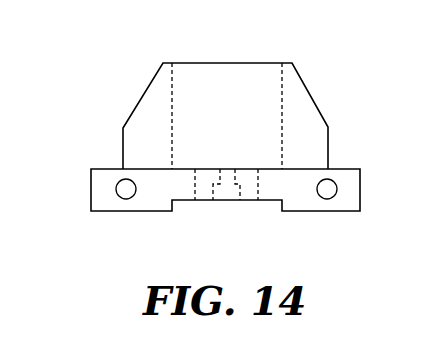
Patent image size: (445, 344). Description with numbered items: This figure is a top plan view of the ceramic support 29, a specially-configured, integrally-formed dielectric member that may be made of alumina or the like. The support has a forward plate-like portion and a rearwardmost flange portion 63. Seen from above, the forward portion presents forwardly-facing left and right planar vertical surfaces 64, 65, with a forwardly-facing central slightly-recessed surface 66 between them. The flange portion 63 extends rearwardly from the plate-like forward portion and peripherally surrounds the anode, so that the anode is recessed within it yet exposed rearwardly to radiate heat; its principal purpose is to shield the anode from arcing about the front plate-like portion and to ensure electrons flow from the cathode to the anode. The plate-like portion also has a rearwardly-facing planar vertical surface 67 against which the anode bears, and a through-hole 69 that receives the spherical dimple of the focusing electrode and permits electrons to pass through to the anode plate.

The ceramic support 29 is at (80, 91).
The flange portion 63 is at (308, 103).
The left planar vertical surface 64 is at (112, 205).
The right planar vertical surface 65 is at (305, 205).
The central slightly-recessed surface 66 is at (204, 200).
The rearwardly-facing planar vertical surface 67 is at (268, 166).
The through-hole 69 is at (229, 200).